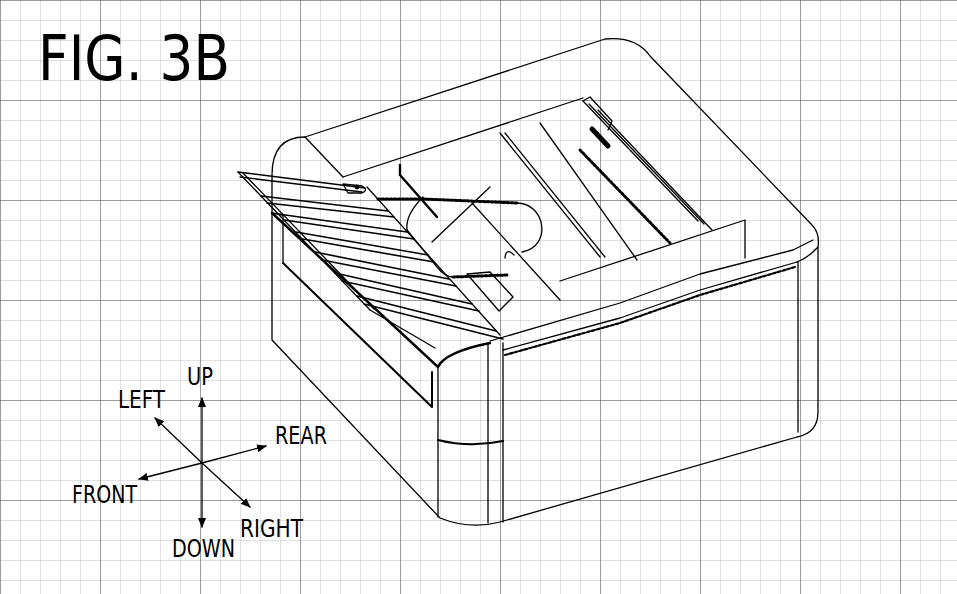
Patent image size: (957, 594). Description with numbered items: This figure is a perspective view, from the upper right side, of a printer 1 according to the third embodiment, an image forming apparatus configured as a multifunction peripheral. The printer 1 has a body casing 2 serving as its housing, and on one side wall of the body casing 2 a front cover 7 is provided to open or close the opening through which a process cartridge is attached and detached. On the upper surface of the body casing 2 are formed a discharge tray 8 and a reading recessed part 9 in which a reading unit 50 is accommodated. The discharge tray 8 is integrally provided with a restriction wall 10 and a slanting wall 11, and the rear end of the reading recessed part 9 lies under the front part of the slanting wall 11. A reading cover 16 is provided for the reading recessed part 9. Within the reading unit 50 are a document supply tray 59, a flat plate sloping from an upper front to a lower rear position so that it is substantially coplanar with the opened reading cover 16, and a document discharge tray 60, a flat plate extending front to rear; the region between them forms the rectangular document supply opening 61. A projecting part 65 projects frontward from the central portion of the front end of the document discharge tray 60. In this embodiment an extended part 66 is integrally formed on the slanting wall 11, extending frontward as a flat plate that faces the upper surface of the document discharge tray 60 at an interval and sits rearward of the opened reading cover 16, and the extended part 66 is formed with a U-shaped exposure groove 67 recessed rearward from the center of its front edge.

The printer 1 is at (686, 513).
The body casing 2 is at (822, 333).
The front cover 7 is at (484, 410).
The discharge tray 8 is at (593, 122).
The reading recessed part 9 is at (386, 183).
The restriction wall 10 is at (668, 217).
The slanting wall 11 is at (524, 152).
The reading cover 16 is at (305, 188).
The reading unit 50 is at (446, 253).
The document supply tray 59 is at (512, 262).
The document discharge tray 60 is at (610, 153).
The document supply opening 61 is at (484, 292).
The projecting part 65 is at (516, 221).
The extended part 66 is at (465, 176).
The exposure groove 67 is at (560, 302).